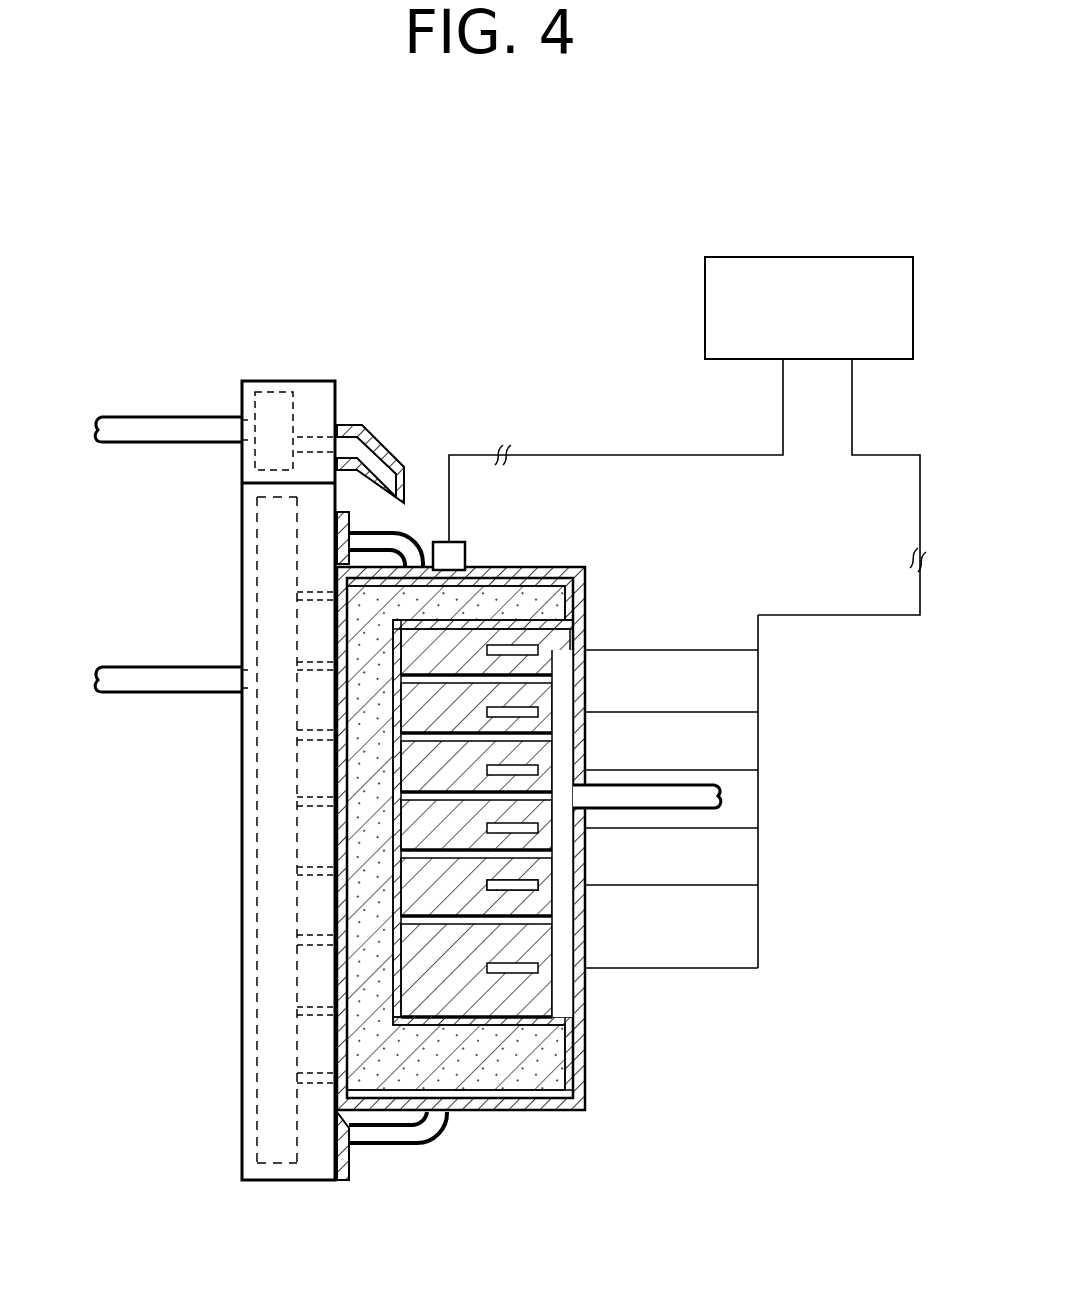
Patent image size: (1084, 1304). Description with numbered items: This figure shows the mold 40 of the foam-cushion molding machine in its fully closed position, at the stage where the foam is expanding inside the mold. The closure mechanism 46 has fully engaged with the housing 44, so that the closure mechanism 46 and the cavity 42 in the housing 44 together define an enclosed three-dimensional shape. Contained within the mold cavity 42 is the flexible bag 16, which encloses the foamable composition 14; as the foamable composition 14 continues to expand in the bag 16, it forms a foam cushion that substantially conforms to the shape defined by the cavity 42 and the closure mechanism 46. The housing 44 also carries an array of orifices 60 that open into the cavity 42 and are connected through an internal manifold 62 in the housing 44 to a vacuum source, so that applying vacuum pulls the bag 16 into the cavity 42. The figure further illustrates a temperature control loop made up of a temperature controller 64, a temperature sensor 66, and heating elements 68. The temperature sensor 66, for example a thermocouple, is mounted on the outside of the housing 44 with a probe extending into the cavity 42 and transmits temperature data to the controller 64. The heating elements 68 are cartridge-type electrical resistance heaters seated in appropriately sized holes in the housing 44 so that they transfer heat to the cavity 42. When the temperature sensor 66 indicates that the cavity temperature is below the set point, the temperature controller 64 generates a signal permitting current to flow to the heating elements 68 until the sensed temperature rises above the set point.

The mold 40 is at (424, 340).
The closure mechanism 46 is at (242, 1027).
The housing 44 is at (587, 612).
The foamable composition 14 is at (535, 1052).
The cavity 42 is at (442, 1067).
The flexible bag 16 is at (490, 1083).
The orifices 60 is at (550, 676).
The internal manifold 62 is at (560, 787).
The heating elements 68 is at (518, 882).
The temperature sensor 66 is at (457, 553).
The temperature controller 64 is at (812, 256).